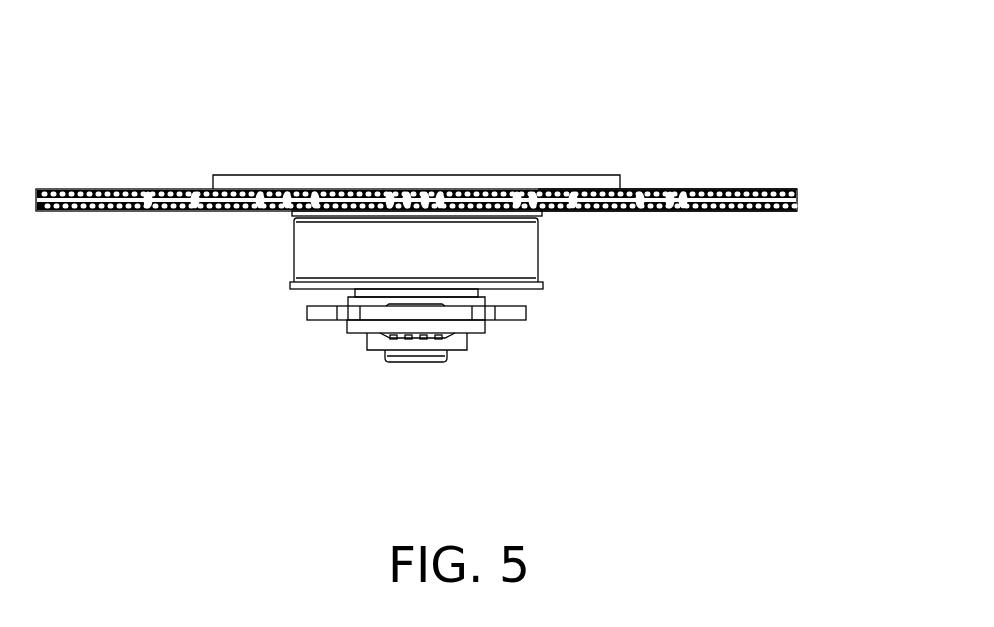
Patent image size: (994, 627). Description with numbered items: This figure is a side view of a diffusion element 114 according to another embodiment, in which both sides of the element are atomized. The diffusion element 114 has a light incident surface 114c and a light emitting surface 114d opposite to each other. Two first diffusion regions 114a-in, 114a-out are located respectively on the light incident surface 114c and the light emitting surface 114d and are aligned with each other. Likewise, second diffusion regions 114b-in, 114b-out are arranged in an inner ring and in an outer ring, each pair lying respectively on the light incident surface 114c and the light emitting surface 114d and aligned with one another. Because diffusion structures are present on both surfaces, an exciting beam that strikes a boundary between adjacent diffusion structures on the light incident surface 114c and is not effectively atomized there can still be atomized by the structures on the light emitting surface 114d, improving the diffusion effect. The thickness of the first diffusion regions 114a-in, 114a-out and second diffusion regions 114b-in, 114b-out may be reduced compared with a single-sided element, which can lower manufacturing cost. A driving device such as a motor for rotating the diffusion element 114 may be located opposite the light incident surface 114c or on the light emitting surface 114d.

The diffusion element 114 is at (473, 210).
The light incident surface 114c is at (714, 190).
The light emitting surface 114d is at (757, 209).
The first diffusion region 114a-in is at (733, 152).
The second diffusion region 114b-in is at (683, 152).
The first diffusion region 114a-out is at (735, 240).
The second diffusion region 114b-out is at (683, 240).